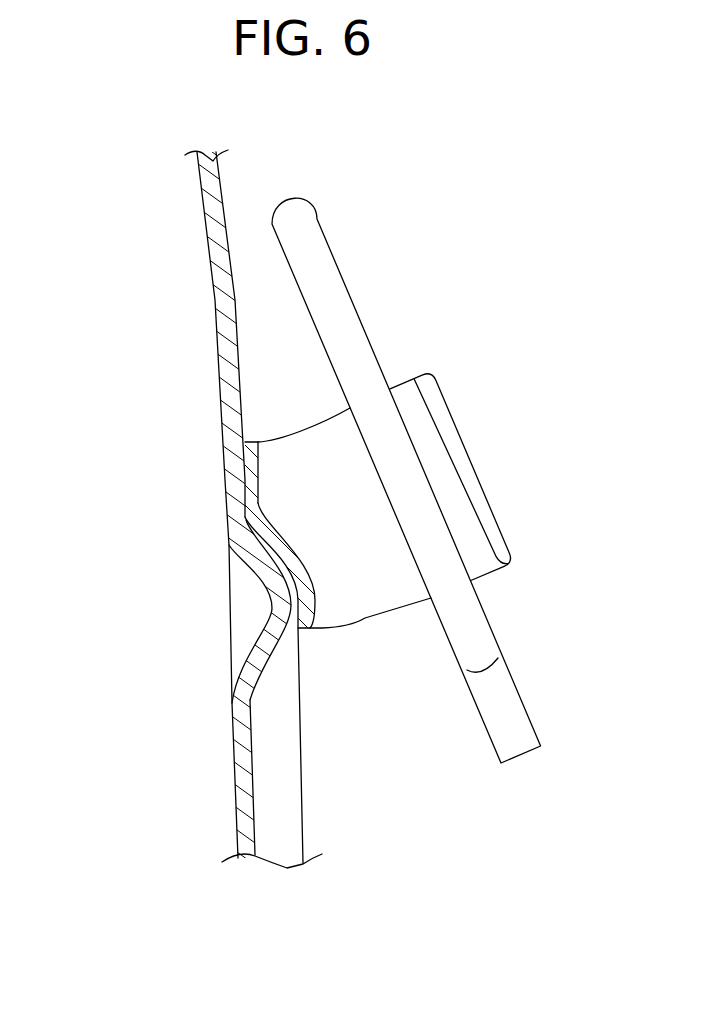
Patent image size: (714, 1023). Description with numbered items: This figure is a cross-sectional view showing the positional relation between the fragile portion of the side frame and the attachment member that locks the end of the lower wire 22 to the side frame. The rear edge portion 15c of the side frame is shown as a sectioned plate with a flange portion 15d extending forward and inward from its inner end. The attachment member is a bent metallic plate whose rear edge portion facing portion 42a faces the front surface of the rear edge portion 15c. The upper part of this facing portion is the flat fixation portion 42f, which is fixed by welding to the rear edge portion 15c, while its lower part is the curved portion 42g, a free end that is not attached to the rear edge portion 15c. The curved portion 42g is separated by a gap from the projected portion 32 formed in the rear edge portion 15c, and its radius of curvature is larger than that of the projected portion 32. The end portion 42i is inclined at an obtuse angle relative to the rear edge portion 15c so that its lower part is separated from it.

The rear edge portion 15c is at (245, 812).
The flange portion 15d is at (273, 752).
The lower wire 22 is at (470, 632).
The projected portion 32 is at (268, 603).
The rear edge portion facing portion 42a is at (235, 530).
The fixation portion 42f is at (245, 489).
The curved portion 42g is at (292, 558).
The end portion 42i is at (452, 432).